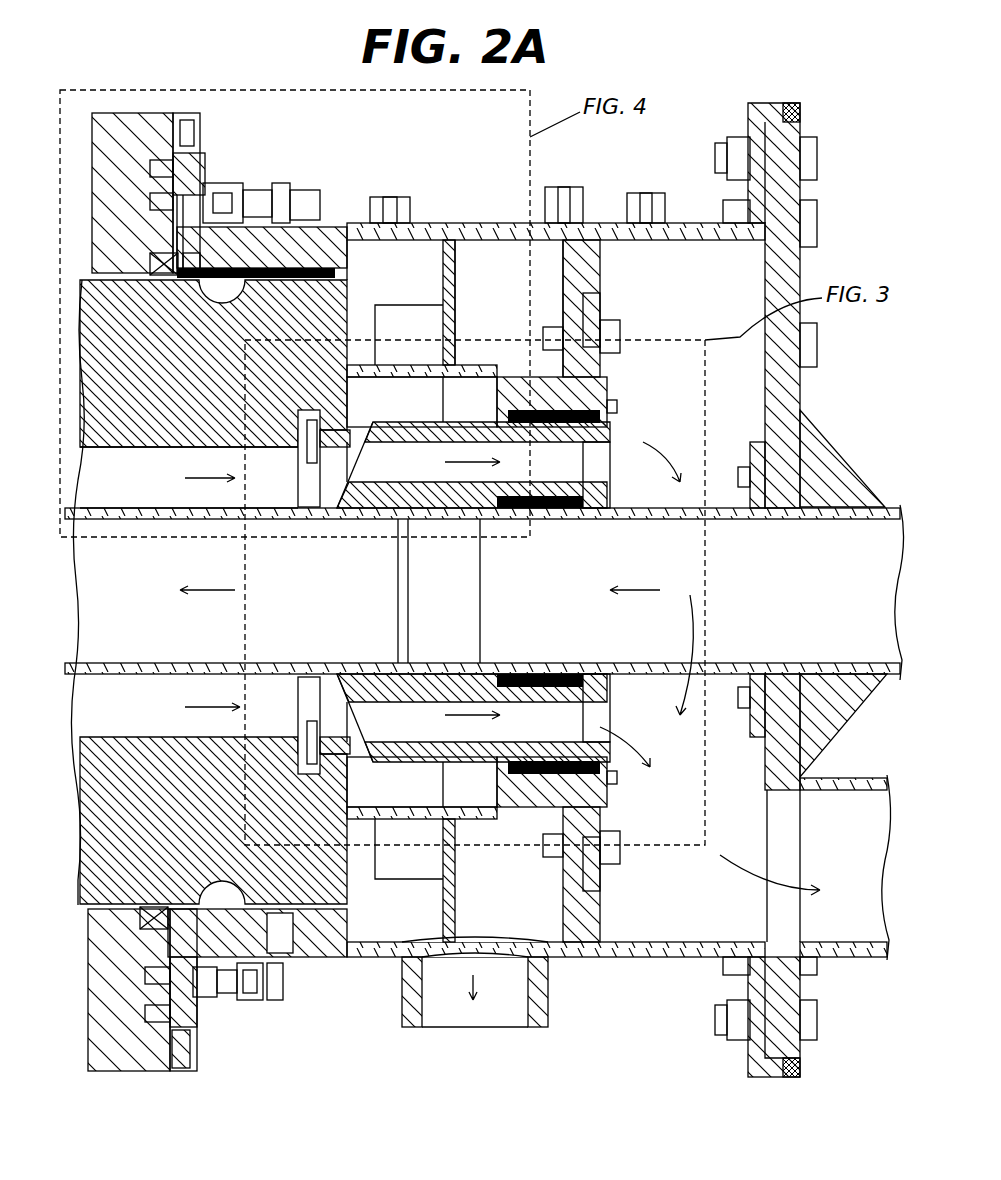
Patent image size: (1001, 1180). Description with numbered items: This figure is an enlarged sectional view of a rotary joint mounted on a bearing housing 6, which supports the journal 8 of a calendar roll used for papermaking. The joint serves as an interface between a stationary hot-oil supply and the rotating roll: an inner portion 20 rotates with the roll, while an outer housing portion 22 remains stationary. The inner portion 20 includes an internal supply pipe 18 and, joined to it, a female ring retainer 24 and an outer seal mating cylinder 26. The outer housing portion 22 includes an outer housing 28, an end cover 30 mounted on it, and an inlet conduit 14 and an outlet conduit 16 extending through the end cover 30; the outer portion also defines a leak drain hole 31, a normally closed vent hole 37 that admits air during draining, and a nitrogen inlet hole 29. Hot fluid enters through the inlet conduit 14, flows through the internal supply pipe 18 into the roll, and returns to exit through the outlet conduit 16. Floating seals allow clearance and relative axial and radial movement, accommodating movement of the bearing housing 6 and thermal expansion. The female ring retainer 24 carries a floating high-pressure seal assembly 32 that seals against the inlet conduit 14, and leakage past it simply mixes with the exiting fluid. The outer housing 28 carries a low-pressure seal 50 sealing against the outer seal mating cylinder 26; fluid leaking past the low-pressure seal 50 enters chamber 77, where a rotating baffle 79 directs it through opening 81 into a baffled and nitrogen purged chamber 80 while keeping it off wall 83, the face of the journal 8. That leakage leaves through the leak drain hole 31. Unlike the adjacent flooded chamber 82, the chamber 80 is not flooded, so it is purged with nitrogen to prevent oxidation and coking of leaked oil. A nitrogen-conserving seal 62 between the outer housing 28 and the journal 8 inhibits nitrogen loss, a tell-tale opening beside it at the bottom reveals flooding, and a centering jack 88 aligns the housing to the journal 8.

The bearing housing 6 is at (158, 124).
The centering jack 88 is at (250, 168).
The nitrogen-conserving seal 62 is at (320, 250).
The outer housing 28 is at (502, 222).
The nitrogen inlet hole 29 is at (393, 183).
The vent hole 37 is at (651, 183).
The outer housing portion 22 is at (435, 195).
The journal 8 is at (347, 283).
The internal supply pipe 18 is at (138, 508).
The wall 83 is at (340, 437).
The female ring retainer 24 is at (413, 490).
The outer seal mating cylinder 26 is at (402, 423).
The rotating baffle 79 is at (402, 367).
The baffled and nitrogen purged chamber 80 is at (482, 263).
The inner portion 20 is at (477, 353).
The opening 81 is at (507, 372).
The low-pressure seal 50 is at (560, 410).
The chamber 77 is at (463, 393).
The floating high-pressure seal assembly 32 is at (547, 520).
The inlet conduit 14 is at (880, 497).
The end cover 30 is at (783, 400).
The chamber 82 is at (727, 285).
The outlet conduit 16 is at (850, 777).
The leak drain hole 31 is at (403, 993).